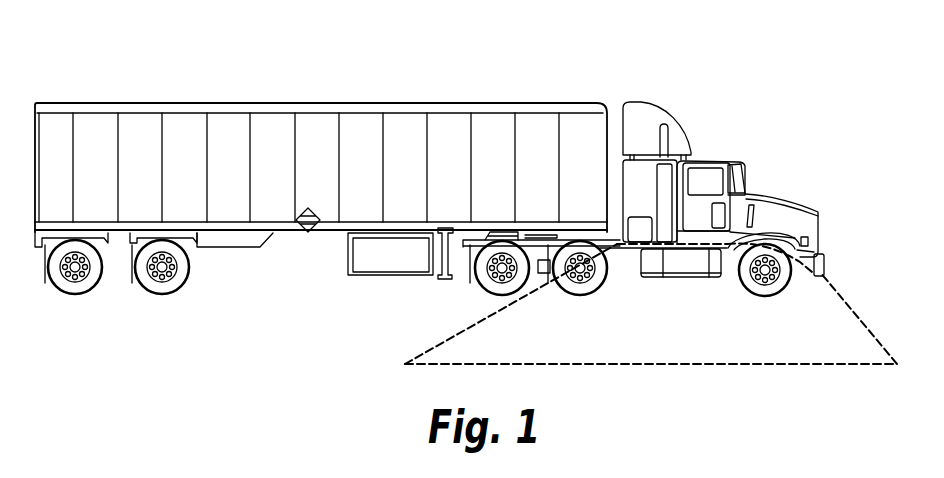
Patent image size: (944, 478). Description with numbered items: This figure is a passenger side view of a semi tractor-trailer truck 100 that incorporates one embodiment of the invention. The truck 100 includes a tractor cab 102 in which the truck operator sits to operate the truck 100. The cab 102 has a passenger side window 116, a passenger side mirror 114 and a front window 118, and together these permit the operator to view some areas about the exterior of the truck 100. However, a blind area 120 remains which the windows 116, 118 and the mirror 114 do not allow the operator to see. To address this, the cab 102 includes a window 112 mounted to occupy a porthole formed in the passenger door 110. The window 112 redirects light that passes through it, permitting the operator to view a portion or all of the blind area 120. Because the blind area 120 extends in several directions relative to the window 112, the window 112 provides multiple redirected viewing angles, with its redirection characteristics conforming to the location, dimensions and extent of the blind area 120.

The semi tractor-trailer truck 100 is at (716, 59).
The tractor cab 102 is at (746, 160).
The passenger door 110 is at (693, 232).
The window 112 is at (772, 268).
The passenger side mirror 114 is at (747, 177).
The passenger side window 116 is at (709, 182).
The front window 118 is at (745, 192).
The blind area 120 is at (650, 368).